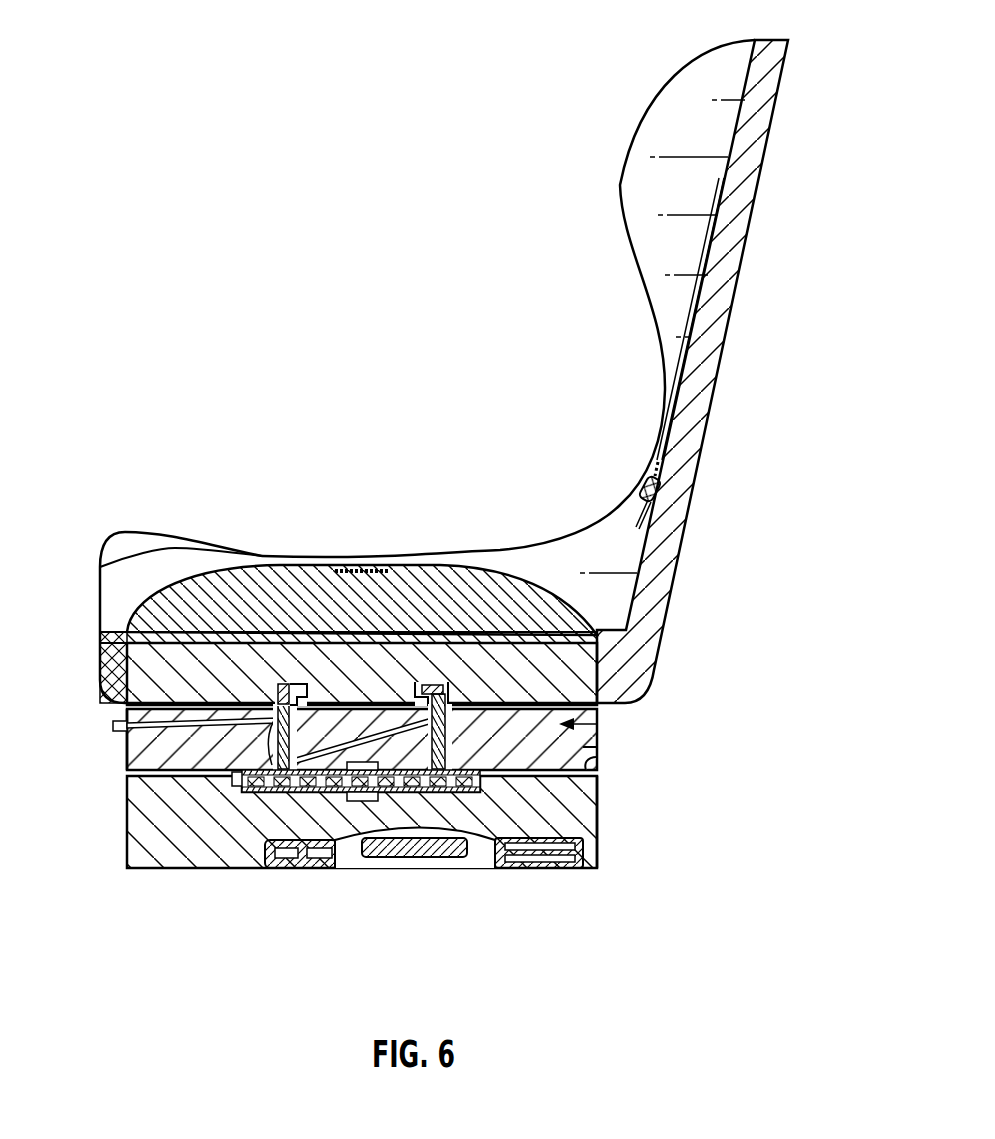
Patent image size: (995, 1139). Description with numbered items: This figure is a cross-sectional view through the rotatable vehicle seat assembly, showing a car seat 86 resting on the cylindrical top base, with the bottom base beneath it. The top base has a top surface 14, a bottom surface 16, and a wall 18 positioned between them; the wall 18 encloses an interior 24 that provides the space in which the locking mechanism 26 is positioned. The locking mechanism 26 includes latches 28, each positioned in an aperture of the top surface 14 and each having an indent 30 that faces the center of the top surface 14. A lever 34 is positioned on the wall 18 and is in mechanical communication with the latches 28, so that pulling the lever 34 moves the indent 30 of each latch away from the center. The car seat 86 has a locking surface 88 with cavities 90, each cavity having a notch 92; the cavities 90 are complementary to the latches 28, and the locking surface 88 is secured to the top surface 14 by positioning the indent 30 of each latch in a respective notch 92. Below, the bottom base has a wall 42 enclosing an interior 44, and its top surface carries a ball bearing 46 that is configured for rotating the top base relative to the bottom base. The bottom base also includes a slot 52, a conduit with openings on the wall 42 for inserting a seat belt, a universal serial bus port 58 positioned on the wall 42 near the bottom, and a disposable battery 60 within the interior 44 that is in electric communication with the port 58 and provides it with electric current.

The car seat 86 is at (638, 132).
The locking surface 88 is at (568, 703).
The top surface 14 is at (597, 703).
The latches 28 is at (283, 705).
The locking mechanism 26 is at (597, 730).
The interior 24 is at (597, 748).
The bottom surface 16 is at (592, 760).
The wall 18 is at (127, 760).
The lever 34 is at (113, 728).
The cavities 90 is at (283, 683).
The indent 30 is at (297, 683).
The notch 92 is at (322, 692).
The interior 44 is at (205, 860).
The wall 42 is at (597, 847).
The ball bearing 46 is at (242, 782).
The port 58 is at (283, 870).
The slot 52 is at (408, 860).
The battery 60 is at (530, 870).